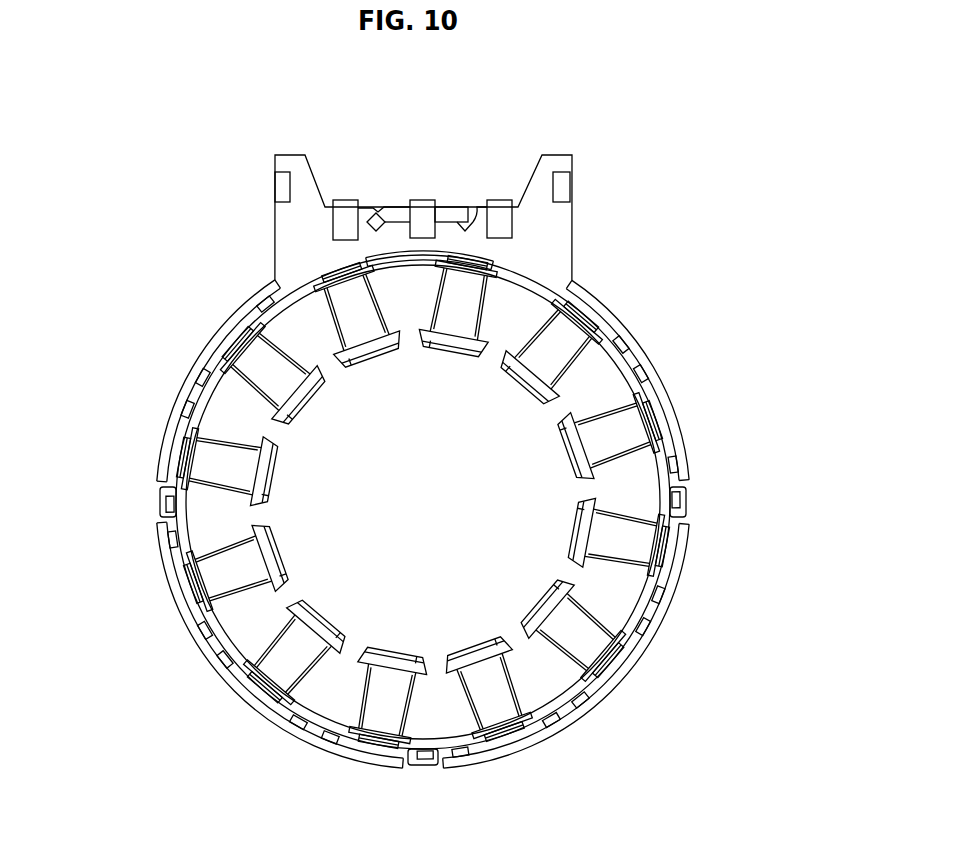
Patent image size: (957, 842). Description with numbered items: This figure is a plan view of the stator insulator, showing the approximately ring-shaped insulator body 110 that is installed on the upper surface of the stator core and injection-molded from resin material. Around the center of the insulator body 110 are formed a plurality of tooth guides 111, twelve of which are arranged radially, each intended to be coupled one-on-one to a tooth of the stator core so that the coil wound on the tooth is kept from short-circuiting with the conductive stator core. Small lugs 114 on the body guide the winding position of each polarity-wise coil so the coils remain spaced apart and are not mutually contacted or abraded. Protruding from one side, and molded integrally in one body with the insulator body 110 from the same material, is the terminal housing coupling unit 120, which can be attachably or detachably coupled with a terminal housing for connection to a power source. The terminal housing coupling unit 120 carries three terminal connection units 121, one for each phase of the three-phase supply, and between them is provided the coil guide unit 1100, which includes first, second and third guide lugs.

The insulator body 110 is at (160, 258).
The tooth guide 111 is at (563, 343).
The lug 114 is at (683, 503).
The terminal housing coupling unit 120 is at (562, 157).
The terminal connection unit 121 is at (345, 204).
The coil guide unit 1100 is at (447, 185).